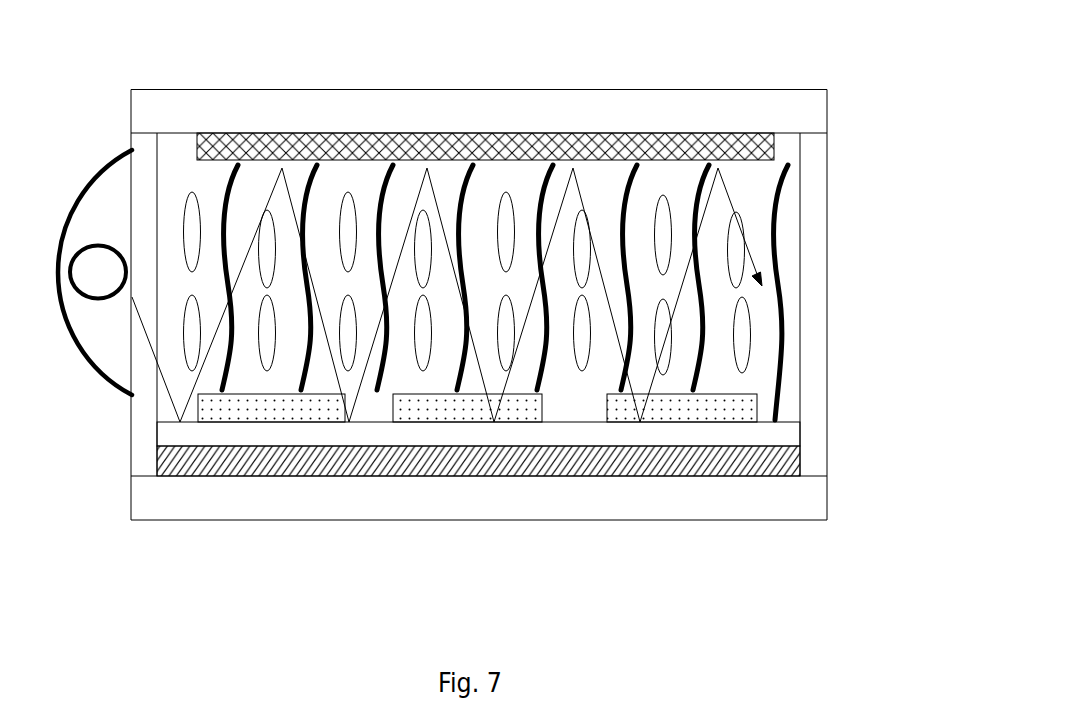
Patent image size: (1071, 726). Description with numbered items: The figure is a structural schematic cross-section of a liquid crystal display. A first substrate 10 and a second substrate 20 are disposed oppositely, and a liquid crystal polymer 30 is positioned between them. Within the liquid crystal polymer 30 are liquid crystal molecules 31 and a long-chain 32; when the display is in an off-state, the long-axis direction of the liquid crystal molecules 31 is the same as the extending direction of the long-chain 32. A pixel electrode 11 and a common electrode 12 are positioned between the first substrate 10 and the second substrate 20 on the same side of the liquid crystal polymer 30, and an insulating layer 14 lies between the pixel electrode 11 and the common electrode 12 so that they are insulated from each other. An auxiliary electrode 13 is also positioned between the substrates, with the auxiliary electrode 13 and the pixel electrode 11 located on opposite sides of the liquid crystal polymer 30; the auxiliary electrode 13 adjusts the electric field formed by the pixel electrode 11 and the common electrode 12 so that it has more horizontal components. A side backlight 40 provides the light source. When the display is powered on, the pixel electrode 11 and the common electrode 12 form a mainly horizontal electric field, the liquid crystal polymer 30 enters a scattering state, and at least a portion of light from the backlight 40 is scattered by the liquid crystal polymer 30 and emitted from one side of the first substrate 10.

The first substrate 10 is at (479, 82).
The second substrate 20 is at (479, 538).
The auxiliary electrode 13 is at (485, 80).
The insulating layer 14 is at (510, 512).
The pixel electrode 11 is at (478, 523).
The common electrode 12 is at (432, 497).
The liquid crystal polymer 30 is at (565, 292).
The liquid crystal molecules 31 is at (742, 316).
The long-chain 32 is at (778, 253).
The side backlight 40 is at (75, 353).